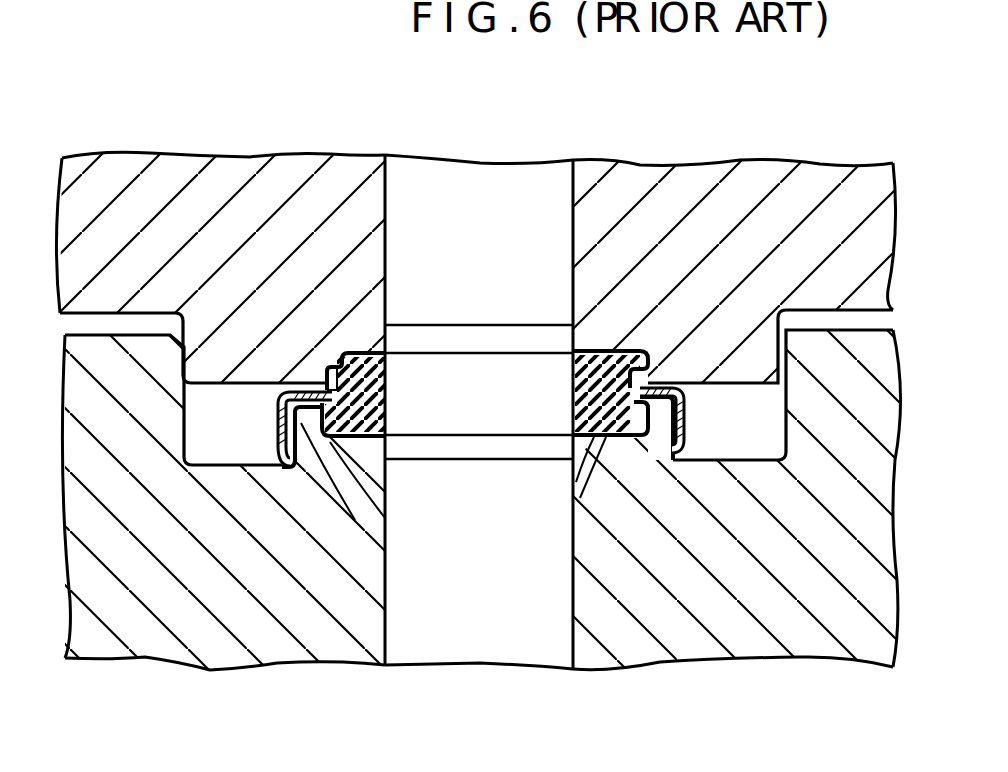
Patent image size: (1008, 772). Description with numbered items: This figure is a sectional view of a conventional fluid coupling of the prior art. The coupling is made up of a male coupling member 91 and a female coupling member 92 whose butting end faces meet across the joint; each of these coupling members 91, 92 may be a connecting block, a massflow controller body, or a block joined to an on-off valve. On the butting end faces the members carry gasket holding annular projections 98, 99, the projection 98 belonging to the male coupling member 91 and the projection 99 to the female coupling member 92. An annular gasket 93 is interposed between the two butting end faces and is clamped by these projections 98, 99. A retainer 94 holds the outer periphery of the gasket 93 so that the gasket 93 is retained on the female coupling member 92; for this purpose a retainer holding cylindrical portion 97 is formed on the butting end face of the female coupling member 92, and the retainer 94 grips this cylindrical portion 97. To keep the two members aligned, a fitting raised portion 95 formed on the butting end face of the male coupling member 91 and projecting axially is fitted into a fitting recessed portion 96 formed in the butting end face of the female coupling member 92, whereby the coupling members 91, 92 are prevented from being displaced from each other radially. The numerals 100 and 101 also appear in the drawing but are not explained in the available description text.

The male coupling member 91 is at (817, 180).
The female coupling member 92 is at (743, 643).
The annular gasket 93 is at (387, 400).
The retainer 94 is at (285, 466).
The fitting raised portion 95 is at (213, 350).
The fitting recessed portion 96 is at (183, 404).
The retainer holding cylindrical portion 97 is at (374, 517).
The gasket holding annular projection 98 is at (375, 352).
The gasket holding annular projection 99 is at (374, 438).
The seal assembly 100 is at (623, 345).
The seal lip 101 is at (592, 448).